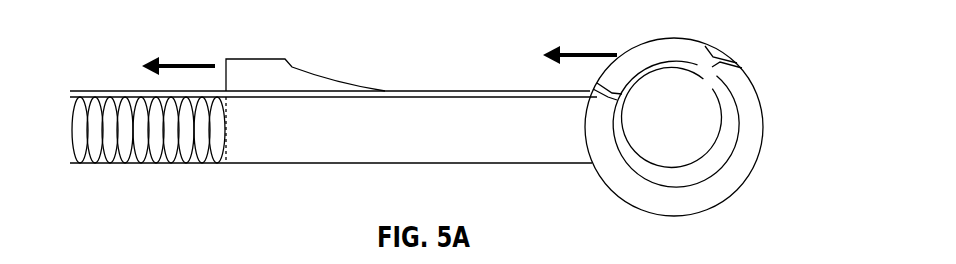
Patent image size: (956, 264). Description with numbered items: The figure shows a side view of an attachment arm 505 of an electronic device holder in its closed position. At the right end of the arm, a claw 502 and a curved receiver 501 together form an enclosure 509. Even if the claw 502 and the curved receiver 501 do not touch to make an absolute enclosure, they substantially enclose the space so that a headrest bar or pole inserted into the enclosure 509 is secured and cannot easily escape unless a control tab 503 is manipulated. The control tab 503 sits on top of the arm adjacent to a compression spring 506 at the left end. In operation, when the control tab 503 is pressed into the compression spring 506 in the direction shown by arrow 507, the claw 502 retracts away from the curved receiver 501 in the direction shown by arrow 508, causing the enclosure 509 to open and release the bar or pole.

The curved receiver 501 is at (733, 163).
The claw 502 is at (675, 36).
The control tab 503 is at (293, 77).
The attachment arm 505 is at (432, 155).
The compression spring 506 is at (70, 133).
The arrow 507 is at (172, 62).
The arrow 508 is at (567, 48).
The enclosure 509 is at (676, 119).